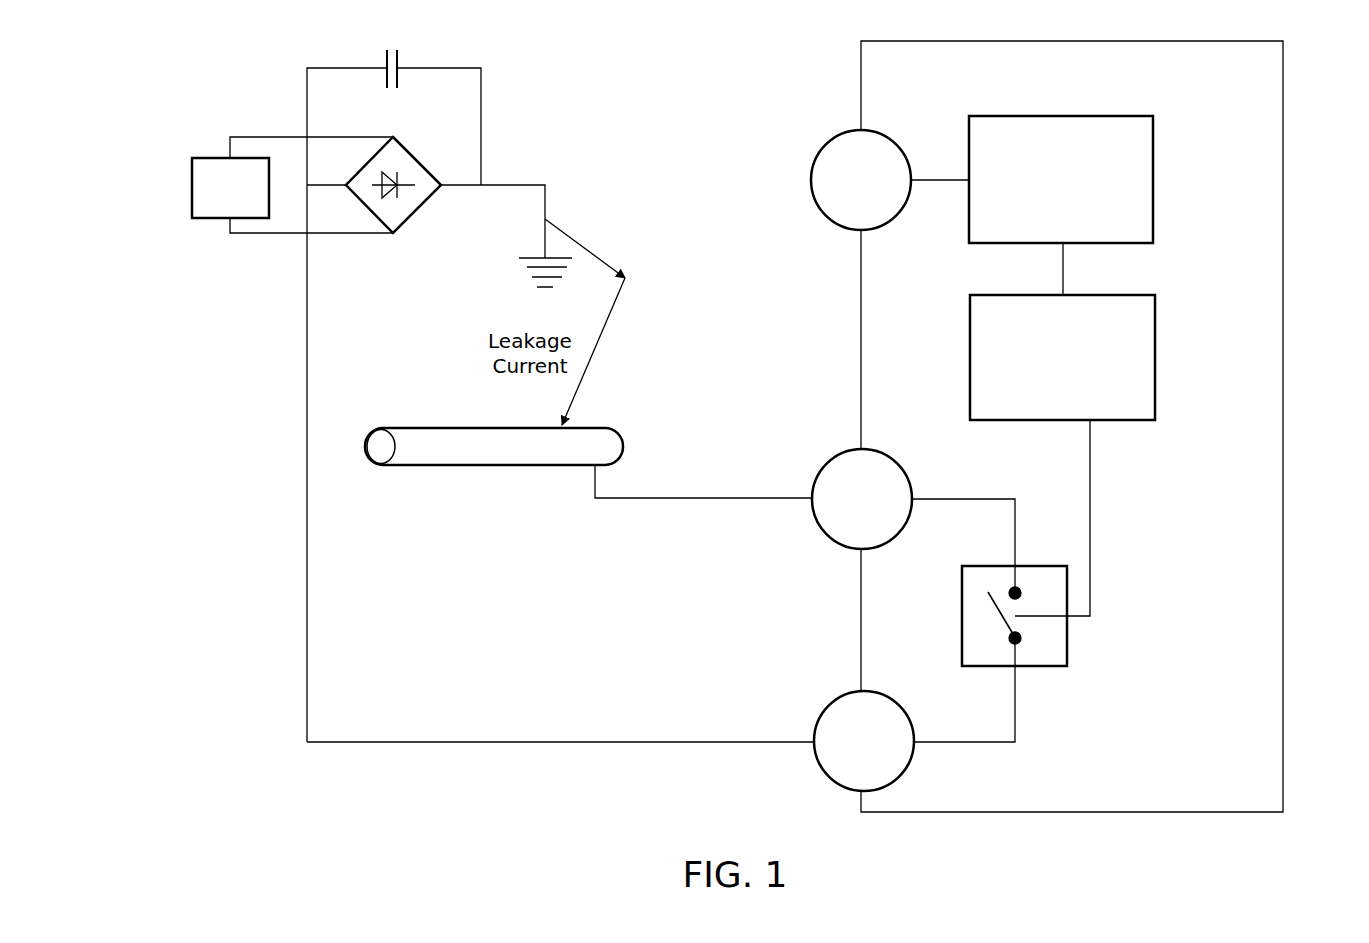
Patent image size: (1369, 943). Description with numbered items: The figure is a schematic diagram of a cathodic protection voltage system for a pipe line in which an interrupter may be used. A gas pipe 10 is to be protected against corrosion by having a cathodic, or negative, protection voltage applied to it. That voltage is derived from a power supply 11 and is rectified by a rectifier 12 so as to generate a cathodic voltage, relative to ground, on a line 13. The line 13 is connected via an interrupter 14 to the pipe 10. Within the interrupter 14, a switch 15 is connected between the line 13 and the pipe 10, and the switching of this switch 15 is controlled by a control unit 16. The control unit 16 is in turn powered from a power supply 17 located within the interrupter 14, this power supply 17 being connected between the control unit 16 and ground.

The gas pipe 10 is at (620, 432).
The power supply 11 is at (192, 178).
The rectifier 12 is at (417, 210).
The line 13 is at (306, 508).
The interrupter 14 is at (1283, 538).
The switch 15 is at (1067, 643).
The control unit 16 is at (1155, 383).
The power supply 17 is at (1153, 185).